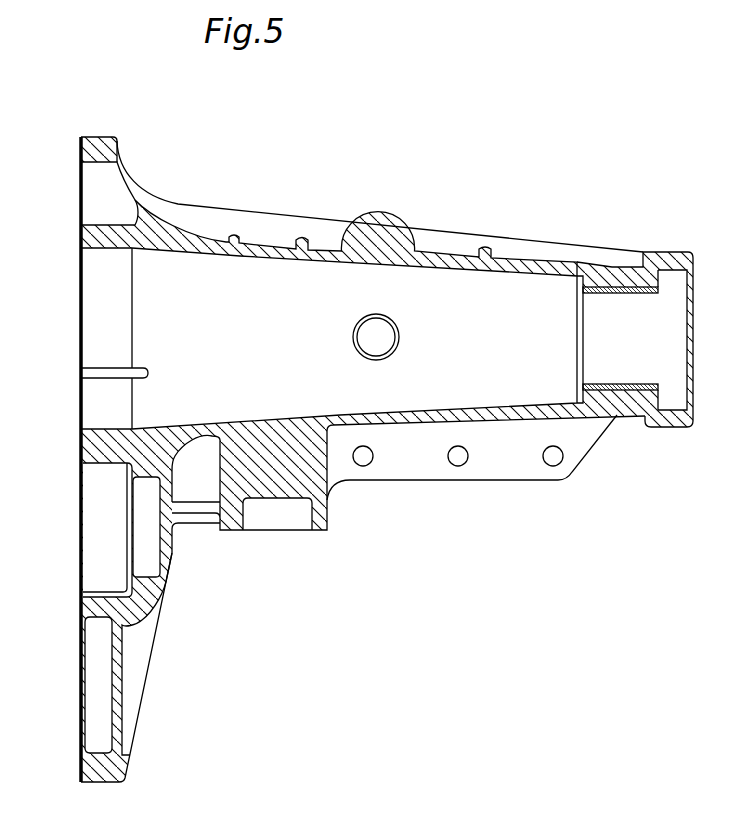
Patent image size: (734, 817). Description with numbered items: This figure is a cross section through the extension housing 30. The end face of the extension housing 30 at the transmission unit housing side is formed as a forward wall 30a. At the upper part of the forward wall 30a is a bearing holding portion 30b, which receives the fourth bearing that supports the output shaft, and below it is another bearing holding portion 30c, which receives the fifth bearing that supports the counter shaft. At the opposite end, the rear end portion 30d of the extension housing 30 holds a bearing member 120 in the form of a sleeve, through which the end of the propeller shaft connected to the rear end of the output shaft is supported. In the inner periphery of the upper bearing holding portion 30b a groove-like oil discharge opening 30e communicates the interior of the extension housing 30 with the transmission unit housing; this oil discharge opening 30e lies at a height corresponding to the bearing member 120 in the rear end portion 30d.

The extension housing 30 is at (277, 211).
The forward wall 30a is at (78, 170).
The bearing holding portion 30b is at (97, 323).
The bearing holding portion 30c is at (97, 537).
The rear end portion 30d is at (610, 268).
The oil discharge opening 30e is at (109, 378).
The bearing member 120 is at (600, 384).